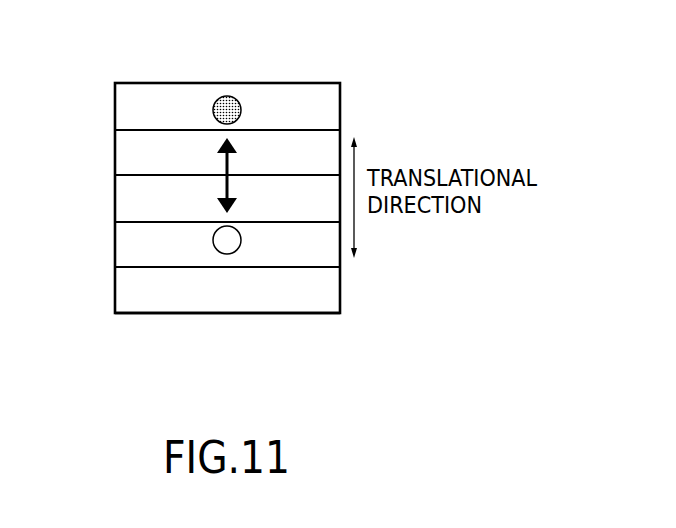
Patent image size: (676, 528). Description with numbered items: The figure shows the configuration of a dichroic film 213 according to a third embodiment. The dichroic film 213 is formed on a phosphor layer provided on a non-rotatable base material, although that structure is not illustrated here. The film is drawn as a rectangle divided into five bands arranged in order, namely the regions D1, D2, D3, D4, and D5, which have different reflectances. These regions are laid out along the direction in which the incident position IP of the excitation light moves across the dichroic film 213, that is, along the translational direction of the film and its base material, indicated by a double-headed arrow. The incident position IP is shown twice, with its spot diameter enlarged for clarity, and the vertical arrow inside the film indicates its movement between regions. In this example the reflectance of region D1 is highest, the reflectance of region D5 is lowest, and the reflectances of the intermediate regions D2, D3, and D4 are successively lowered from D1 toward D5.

The dichroic film 213 is at (345, 110).
The region D1 is at (127, 114).
The region D2 is at (127, 161).
The region D3 is at (127, 207).
The region D4 is at (127, 254).
The region D5 is at (127, 300).
The incident position IP is at (241, 113).